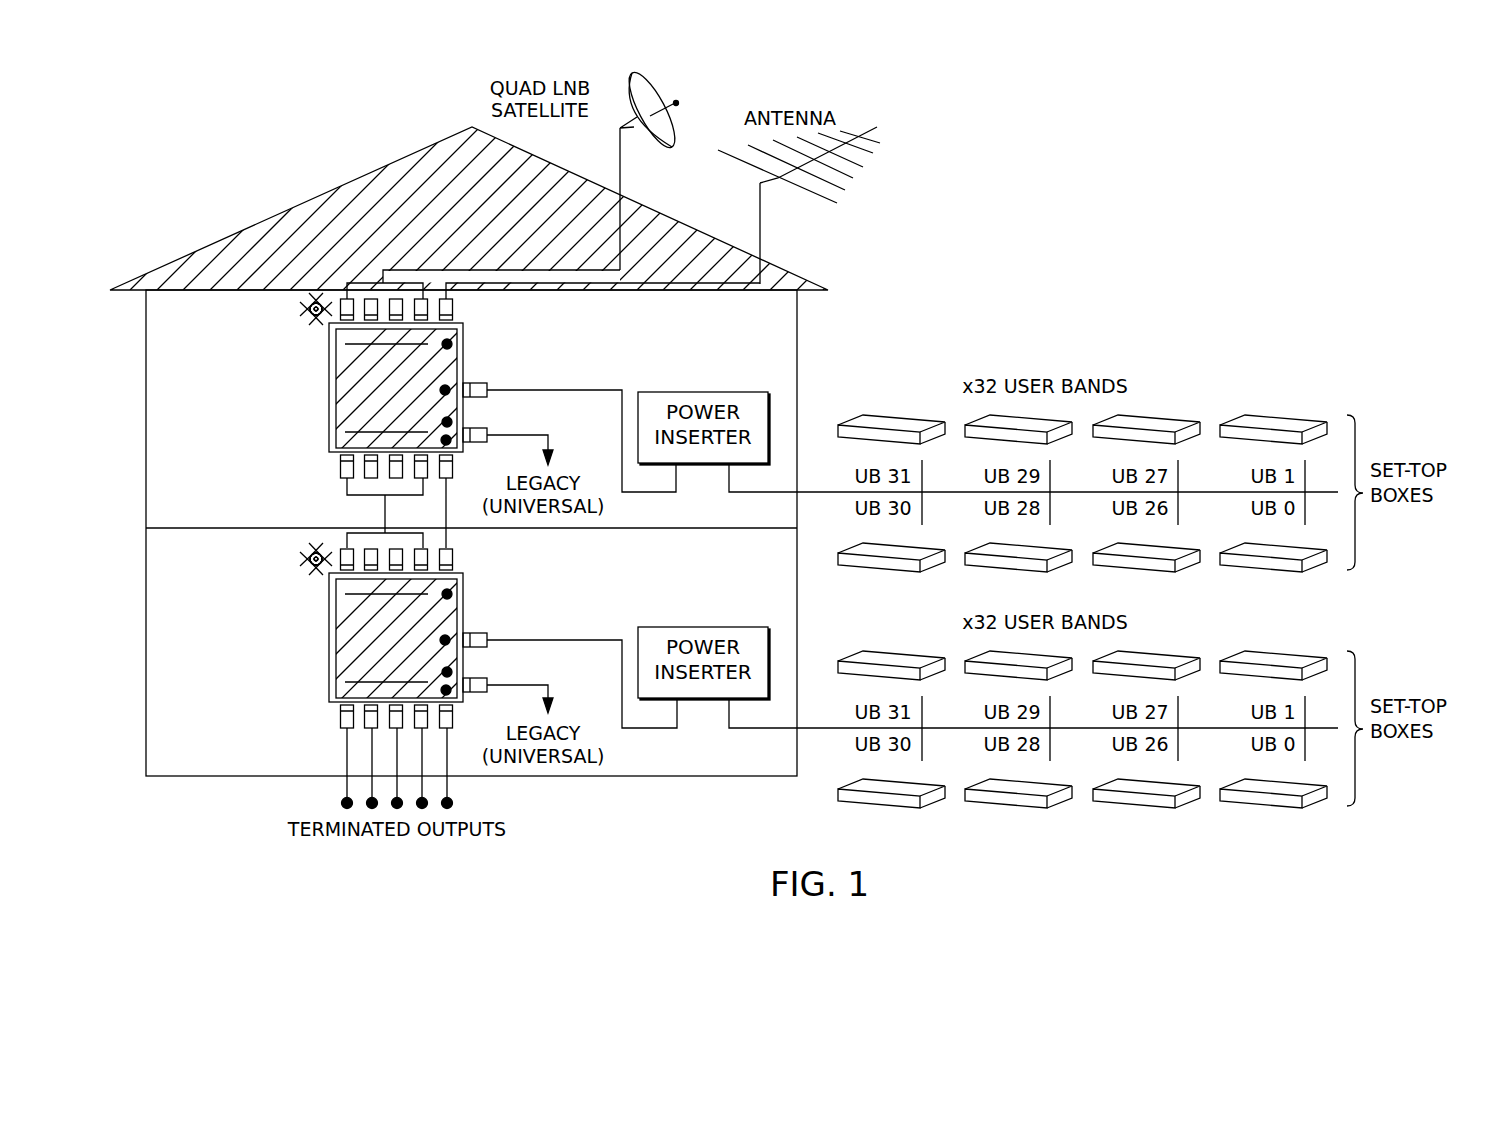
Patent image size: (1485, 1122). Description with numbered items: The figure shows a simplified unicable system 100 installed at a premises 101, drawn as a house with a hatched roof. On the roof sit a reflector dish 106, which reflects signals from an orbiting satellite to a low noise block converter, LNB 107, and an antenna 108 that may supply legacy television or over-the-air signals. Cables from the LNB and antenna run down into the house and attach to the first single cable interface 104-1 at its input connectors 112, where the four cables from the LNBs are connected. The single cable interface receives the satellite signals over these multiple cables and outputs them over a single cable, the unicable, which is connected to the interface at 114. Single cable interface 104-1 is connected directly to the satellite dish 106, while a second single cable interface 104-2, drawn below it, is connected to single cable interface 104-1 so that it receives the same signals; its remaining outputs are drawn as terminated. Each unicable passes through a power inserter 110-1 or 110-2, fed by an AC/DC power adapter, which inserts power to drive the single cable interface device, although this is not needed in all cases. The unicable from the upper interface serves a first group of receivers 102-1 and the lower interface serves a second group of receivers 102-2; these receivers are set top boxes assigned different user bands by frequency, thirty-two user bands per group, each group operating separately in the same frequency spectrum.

The system 100 is at (222, 99).
The premises 101 is at (307, 201).
The first group of receivers 102-1 is at (1142, 473).
The second group of receivers 102-2 is at (1142, 709).
The single cable interface 104-1 is at (463, 348).
The single cable interface 104-2 is at (463, 598).
The reflector dish 106 is at (648, 84).
The LNB (low noise block converter) 107 is at (672, 112).
The antenna 108 is at (877, 128).
The power inserter 110-1 is at (697, 463).
The power inserter 110-2 is at (699, 698).
The connection point for the four cables 112 is at (418, 270).
The connection point for the unicable 114 is at (487, 393).